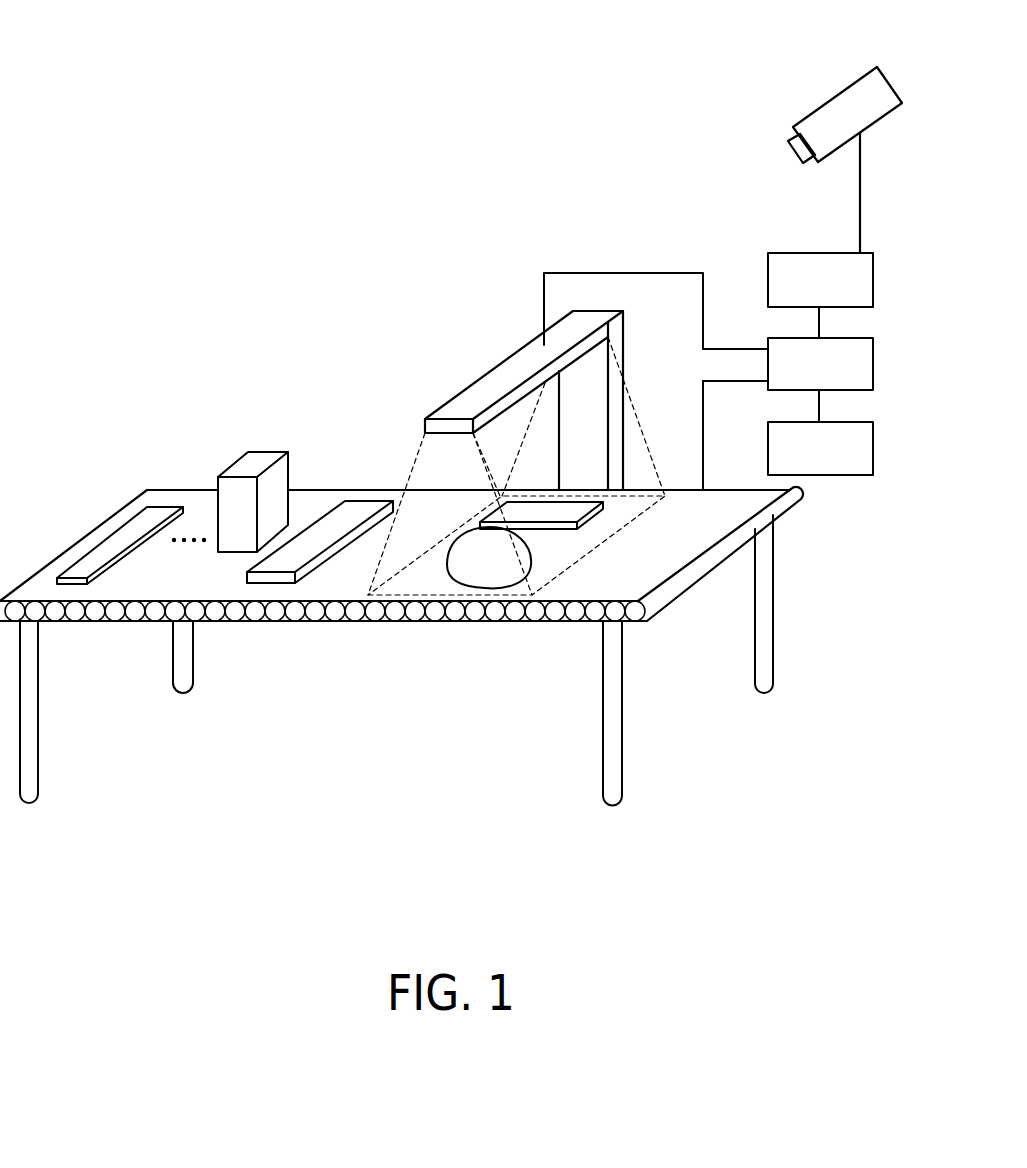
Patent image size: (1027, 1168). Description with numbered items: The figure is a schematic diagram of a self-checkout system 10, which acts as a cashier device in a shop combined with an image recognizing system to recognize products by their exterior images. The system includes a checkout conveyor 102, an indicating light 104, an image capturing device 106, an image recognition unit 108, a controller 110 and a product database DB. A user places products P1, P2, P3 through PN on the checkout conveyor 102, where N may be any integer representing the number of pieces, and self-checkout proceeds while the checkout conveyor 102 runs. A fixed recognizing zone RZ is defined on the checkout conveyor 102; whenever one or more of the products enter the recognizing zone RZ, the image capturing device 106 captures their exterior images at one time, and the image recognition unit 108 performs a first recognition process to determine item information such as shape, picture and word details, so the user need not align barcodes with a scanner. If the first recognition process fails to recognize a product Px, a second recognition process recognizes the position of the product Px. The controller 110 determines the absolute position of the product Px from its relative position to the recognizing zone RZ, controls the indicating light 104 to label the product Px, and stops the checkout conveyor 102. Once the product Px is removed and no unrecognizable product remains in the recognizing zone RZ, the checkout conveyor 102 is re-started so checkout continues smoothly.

The self-checkout system 10 is at (185, 62).
The checkout conveyor 102 is at (323, 500).
The indicating light 104 is at (497, 388).
The image capturing device 106 is at (835, 95).
The image recognition unit 108 is at (847, 297).
The controller 110 is at (847, 383).
The product database DB is at (843, 465).
The product P1 is at (592, 522).
The product P2 is at (372, 498).
The product P3 is at (272, 450).
The product PN is at (170, 507).
The product Px is at (536, 556).
The recognizing zone RZ is at (448, 598).